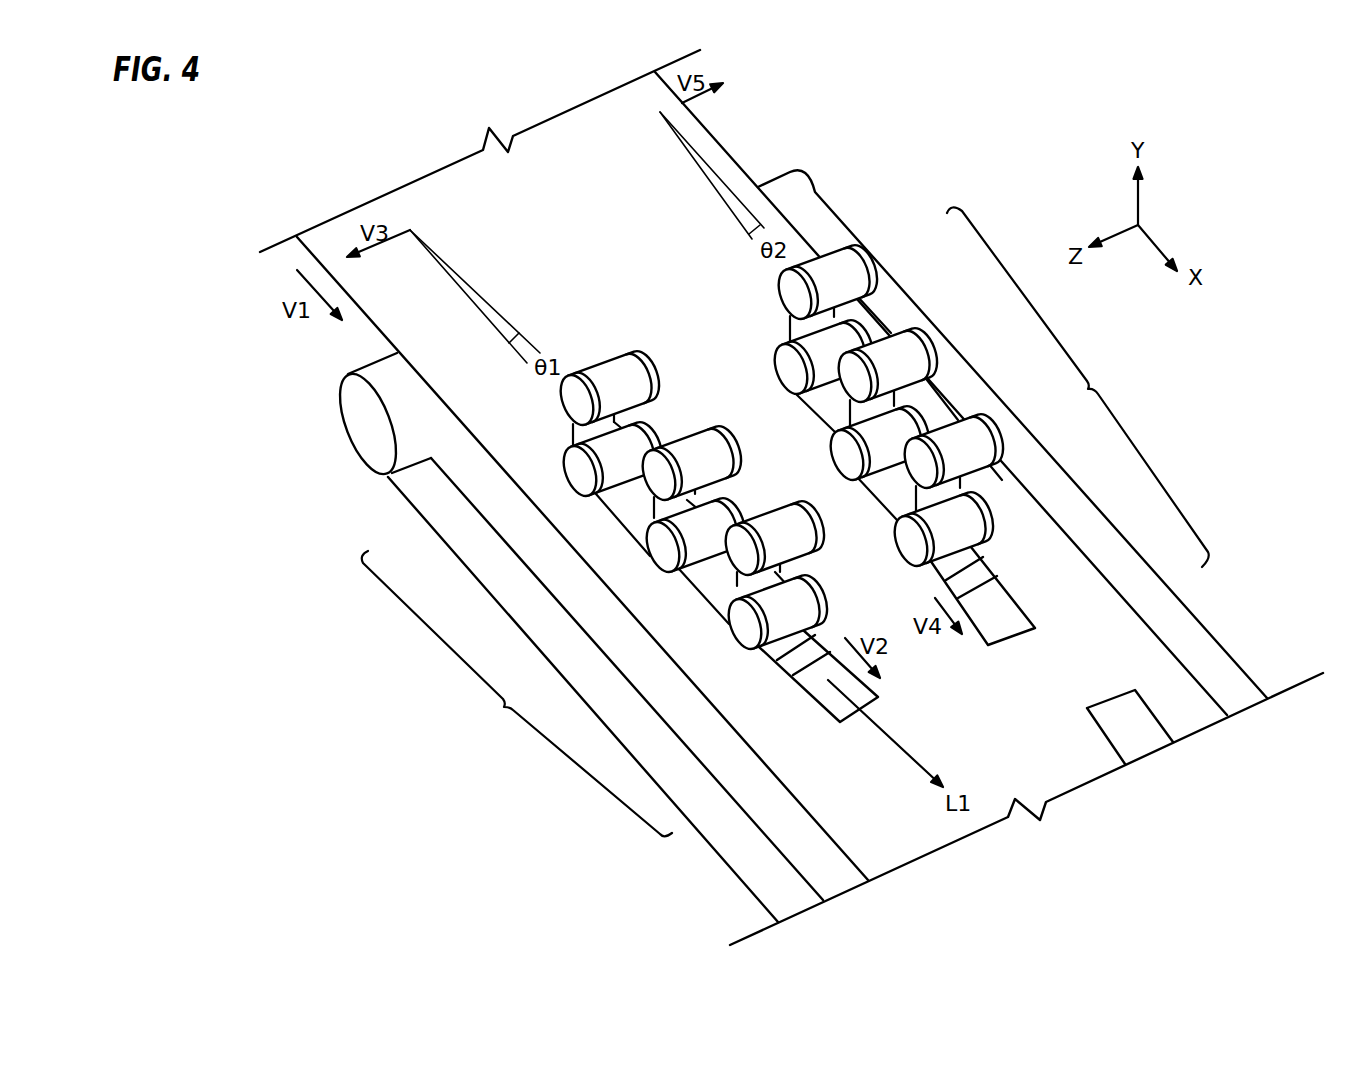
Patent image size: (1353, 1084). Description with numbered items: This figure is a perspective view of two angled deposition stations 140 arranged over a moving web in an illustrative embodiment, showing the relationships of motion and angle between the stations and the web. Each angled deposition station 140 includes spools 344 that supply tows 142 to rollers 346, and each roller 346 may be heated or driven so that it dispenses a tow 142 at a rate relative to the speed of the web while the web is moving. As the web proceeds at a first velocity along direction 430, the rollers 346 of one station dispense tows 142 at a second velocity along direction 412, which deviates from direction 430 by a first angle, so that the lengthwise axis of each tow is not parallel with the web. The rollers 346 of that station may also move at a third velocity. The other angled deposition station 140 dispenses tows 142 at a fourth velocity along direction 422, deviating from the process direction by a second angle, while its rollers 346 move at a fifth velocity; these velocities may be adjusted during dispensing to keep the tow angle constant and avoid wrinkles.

The angled deposition station 140 is at (791, 497).
The tow 142 is at (820, 697).
The spool 344 is at (831, 262).
The roller 346 is at (786, 380).
The direction of V2 412 is at (484, 299).
The direction of V4 422 is at (720, 195).
The direction of V1 430 is at (472, 304).